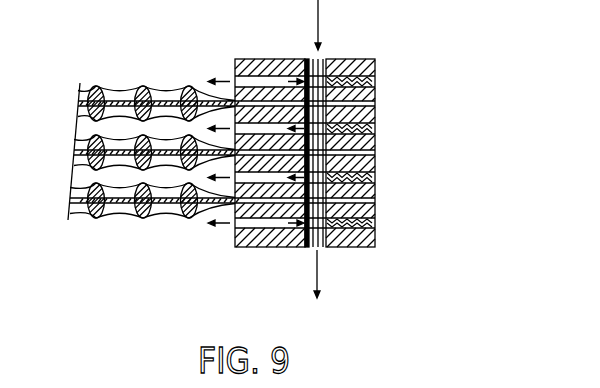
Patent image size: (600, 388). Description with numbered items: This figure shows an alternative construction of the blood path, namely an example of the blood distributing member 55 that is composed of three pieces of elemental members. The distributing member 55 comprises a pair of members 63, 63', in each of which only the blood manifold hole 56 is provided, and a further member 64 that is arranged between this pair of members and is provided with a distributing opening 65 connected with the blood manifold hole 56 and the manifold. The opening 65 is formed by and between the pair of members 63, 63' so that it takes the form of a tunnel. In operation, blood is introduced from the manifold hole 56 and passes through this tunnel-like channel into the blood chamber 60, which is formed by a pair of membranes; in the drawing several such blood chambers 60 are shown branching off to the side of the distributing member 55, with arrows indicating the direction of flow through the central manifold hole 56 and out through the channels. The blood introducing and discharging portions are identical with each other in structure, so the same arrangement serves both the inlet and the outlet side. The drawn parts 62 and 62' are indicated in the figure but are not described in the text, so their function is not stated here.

The blood distributing member 55 is at (407, 153).
The blood manifold hole 56 is at (322, 59).
The blood chamber 60 is at (156, 226).
The tube wall 62 is at (158, 193).
The inner feed conduit 62' is at (156, 226).
The member 63 is at (383, 157).
The member 63' is at (385, 203).
The member 64 is at (375, 177).
The distributing opening 65 is at (268, 173).